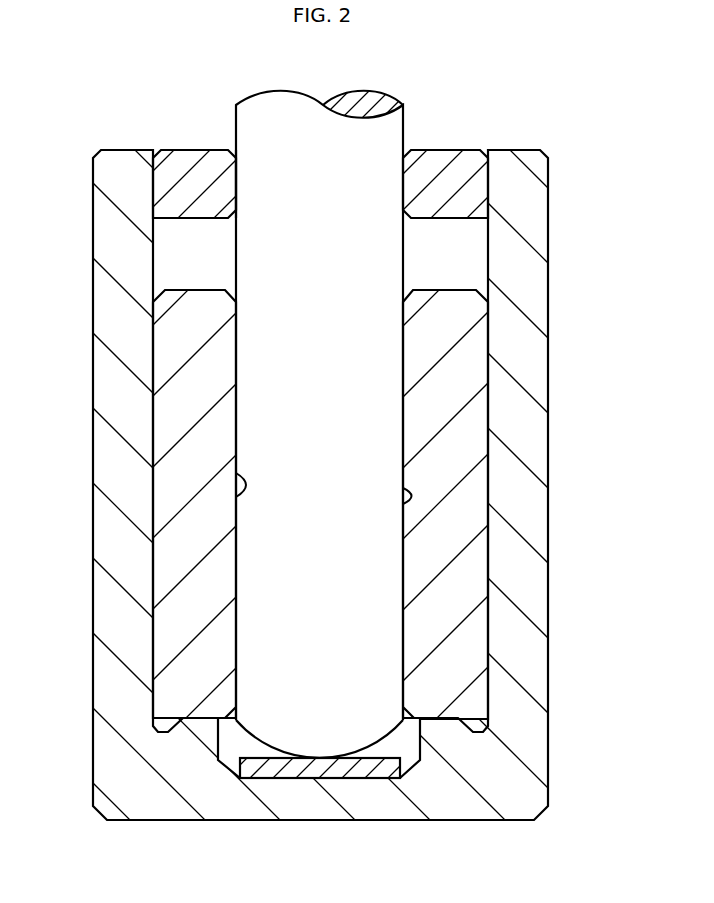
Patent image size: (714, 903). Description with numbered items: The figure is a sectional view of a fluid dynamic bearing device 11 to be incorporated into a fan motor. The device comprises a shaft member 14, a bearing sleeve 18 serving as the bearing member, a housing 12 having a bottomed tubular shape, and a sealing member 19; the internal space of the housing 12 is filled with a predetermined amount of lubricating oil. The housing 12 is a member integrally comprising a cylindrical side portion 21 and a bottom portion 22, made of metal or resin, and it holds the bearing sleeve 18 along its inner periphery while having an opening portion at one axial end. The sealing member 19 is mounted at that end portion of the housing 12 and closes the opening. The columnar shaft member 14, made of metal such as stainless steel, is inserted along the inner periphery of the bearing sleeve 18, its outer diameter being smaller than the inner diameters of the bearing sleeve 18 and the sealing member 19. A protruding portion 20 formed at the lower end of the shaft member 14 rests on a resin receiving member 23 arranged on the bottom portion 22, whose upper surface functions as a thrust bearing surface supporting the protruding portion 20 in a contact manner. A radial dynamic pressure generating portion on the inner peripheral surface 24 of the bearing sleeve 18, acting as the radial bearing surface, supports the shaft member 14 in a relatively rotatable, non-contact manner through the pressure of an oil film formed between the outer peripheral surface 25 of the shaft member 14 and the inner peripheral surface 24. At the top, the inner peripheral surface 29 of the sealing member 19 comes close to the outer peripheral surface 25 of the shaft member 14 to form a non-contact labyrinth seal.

The fluid dynamic bearing device 11 is at (519, 102).
The housing 12 is at (549, 518).
The shaft member 14 is at (405, 125).
The bearing sleeve 18 is at (185, 403).
The sealing member 19 is at (187, 150).
The protruding portion 20 is at (386, 745).
The cylindrical side portion 21 is at (530, 358).
The bottom portion 22 is at (300, 808).
The receiving member 23 is at (350, 773).
The inner peripheral surface 24 is at (243, 487).
The outer peripheral surface 25 is at (403, 500).
The inner peripheral surface 29 is at (238, 173).